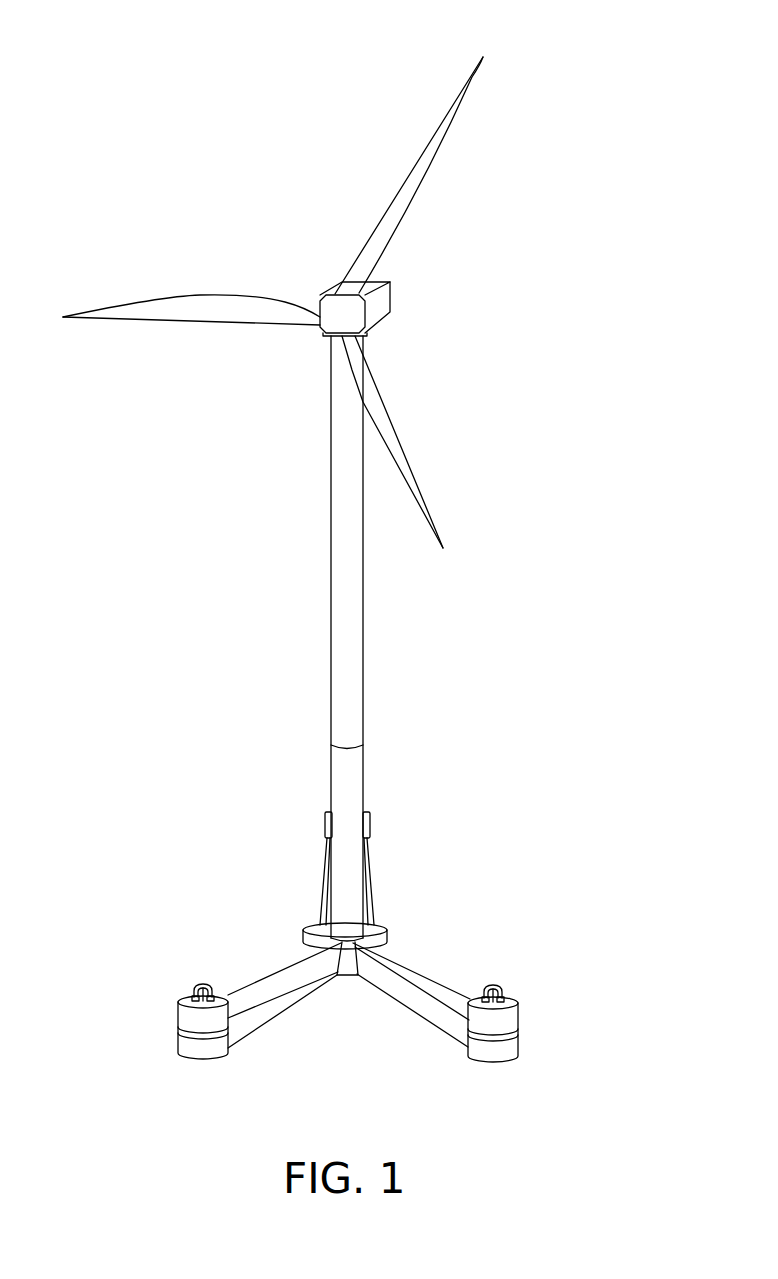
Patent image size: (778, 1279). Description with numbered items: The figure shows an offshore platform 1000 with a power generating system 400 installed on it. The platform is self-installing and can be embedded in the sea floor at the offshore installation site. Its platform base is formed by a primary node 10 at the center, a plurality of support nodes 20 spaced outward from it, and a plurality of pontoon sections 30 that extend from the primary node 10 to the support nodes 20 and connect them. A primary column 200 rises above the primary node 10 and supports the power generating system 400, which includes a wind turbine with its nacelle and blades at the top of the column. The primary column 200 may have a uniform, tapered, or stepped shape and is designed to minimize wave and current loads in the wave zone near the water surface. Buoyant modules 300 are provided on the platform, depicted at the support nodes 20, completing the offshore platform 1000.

The offshore platform 1000 is at (543, 66).
The power generating system 400 is at (391, 300).
The primary column 200 is at (352, 785).
The primary node 10 is at (386, 927).
The pontoon section 30 is at (272, 967).
The support node 20 is at (182, 1047).
The buoyant module 300 is at (185, 997).